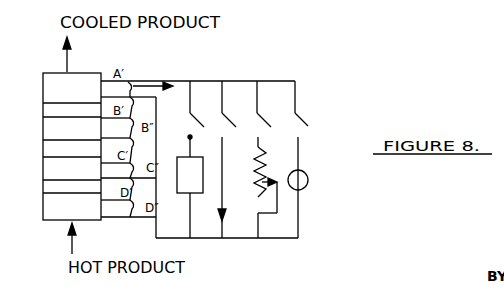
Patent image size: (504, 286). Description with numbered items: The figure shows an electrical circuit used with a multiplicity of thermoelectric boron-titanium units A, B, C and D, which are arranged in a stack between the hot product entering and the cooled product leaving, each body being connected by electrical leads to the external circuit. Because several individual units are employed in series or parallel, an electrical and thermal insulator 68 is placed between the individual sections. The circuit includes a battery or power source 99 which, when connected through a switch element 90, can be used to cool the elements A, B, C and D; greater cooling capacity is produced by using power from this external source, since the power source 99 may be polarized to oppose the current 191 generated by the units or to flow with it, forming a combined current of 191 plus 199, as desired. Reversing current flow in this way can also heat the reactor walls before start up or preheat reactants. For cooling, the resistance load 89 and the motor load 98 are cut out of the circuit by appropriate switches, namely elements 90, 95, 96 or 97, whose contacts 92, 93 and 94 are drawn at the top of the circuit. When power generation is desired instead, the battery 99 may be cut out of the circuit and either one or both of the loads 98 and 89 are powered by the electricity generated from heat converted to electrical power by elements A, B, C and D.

The electrical and thermal insulator 68 is at (57, 146).
The resistance load 89 is at (257, 187).
The switch element 90 is at (186, 104).
The switch contact 92 is at (201, 120).
The switch contact 93 is at (245, 97).
The switch contact 94 is at (284, 97).
The switch 95 is at (216, 104).
The switch 96 is at (251, 114).
The switch 97 is at (289, 114).
The motor load 98 is at (298, 180).
The power source 99 is at (190, 175).
The current 191 is at (198, 151).
The current 199 is at (176, 216).